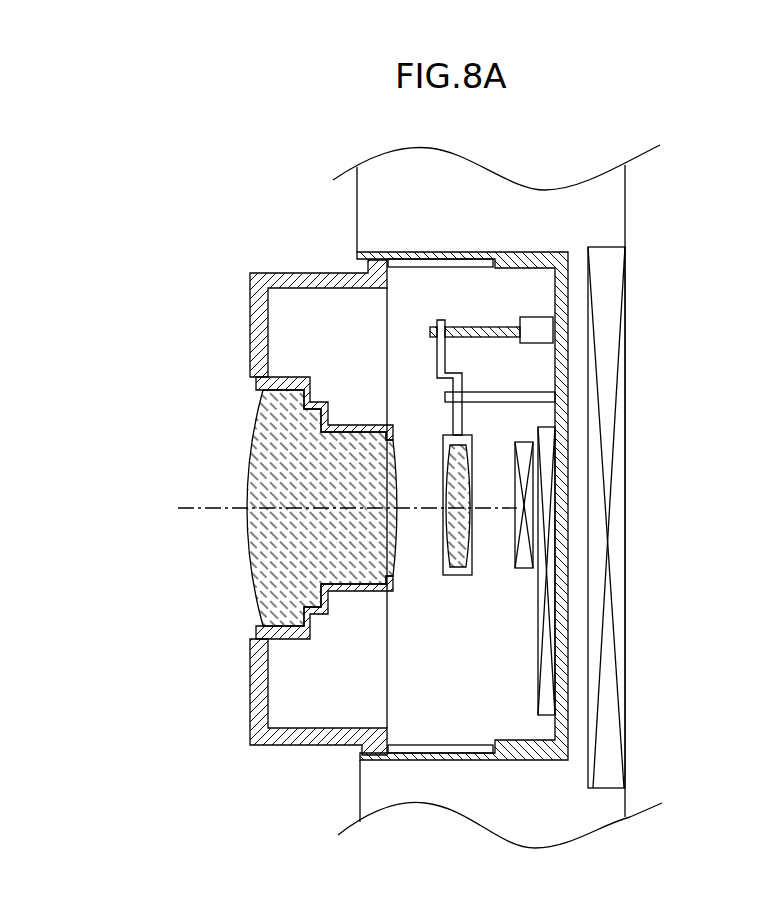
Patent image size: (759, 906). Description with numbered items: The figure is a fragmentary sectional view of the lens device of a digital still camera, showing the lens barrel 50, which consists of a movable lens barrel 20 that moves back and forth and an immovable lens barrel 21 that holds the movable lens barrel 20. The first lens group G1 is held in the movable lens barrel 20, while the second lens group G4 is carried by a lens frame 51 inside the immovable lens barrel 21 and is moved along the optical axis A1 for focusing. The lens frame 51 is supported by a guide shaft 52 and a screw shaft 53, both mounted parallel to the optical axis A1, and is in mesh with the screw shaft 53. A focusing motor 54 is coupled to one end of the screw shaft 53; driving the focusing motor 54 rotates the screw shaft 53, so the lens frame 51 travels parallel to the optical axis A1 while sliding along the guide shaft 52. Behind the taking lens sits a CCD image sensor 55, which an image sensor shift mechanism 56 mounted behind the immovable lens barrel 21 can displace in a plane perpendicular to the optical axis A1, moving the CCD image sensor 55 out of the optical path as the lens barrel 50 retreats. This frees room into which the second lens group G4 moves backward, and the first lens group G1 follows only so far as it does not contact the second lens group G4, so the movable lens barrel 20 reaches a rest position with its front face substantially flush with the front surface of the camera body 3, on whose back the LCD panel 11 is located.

The camera body 3 is at (626, 205).
The liquid crystal display panel 11 is at (615, 580).
The movable lens barrel 20 is at (310, 277).
The immovable lens barrel 21 is at (428, 252).
The lens barrel 50 is at (367, 140).
The lens frame 51 is at (442, 363).
The guide shaft 52 is at (542, 395).
The screw shaft 53 is at (468, 327).
The focusing motor 54 is at (538, 325).
The CCD image sensor 55 is at (525, 547).
The image sensor shift mechanism 56 is at (545, 677).
The optical axis A1 is at (212, 506).
The first lens group G1 is at (357, 562).
The second lens group G4 is at (450, 535).